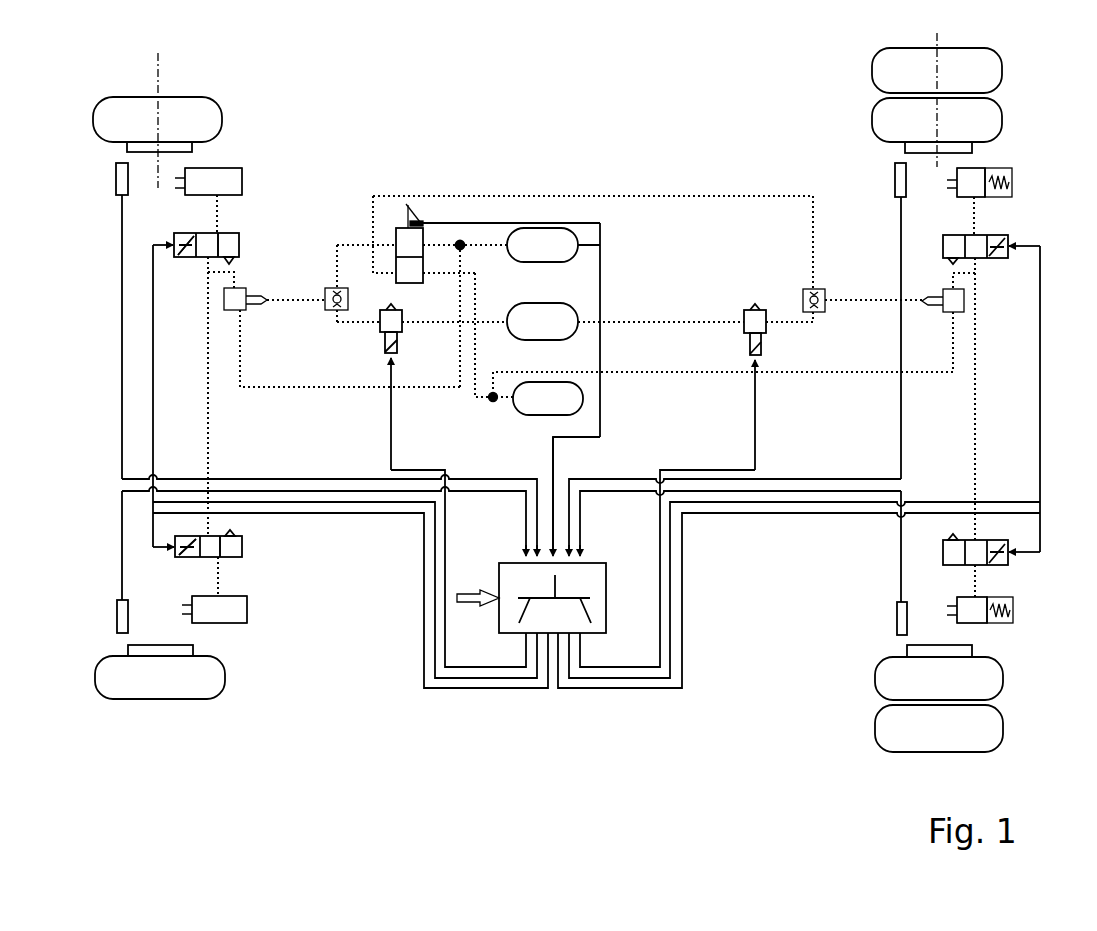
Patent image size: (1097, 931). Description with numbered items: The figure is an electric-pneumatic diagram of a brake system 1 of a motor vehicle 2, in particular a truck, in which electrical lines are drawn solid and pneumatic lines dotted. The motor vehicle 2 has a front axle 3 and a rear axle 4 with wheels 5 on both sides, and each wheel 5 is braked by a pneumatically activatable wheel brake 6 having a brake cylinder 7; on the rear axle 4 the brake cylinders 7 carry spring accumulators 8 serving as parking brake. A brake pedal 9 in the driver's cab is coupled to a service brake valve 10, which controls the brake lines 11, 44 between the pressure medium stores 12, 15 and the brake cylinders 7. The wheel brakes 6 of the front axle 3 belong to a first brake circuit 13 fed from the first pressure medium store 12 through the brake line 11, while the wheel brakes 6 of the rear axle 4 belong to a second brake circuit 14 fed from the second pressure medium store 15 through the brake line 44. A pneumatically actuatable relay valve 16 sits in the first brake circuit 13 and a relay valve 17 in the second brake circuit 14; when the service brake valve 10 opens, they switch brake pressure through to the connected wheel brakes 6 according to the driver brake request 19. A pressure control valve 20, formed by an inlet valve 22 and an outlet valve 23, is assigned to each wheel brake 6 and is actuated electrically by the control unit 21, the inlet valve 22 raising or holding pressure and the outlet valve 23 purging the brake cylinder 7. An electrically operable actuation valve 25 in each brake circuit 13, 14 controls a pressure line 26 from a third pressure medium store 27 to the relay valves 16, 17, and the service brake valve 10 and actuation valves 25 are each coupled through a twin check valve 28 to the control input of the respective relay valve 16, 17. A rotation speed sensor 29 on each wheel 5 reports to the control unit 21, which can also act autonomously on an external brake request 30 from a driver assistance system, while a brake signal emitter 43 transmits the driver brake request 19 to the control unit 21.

The brake system 1 is at (412, 645).
The motor vehicle 2 is at (552, 106).
The front axle 3 is at (160, 76).
The rear axle 4 is at (940, 36).
The wheels 5 is at (207, 113).
The wheel brake 6 is at (216, 153).
The brake cylinder 7 is at (229, 176).
The spring accumulator 8 is at (1012, 186).
The brake pedal 9 is at (408, 212).
The service brake valve 10 is at (392, 240).
The brake line 11 is at (340, 246).
The first pressure medium store 12 is at (585, 246).
The first brake circuit 13 is at (318, 389).
The second brake circuit 14 is at (662, 370).
The second pressure medium store 15 is at (588, 400).
The relay valve 16 is at (248, 291).
The relay valve 17 is at (966, 300).
The driver brake request 19 is at (548, 222).
The pressure control valve 20 is at (198, 264).
The control unit 21 is at (592, 578).
The inlet valve 22 is at (202, 242).
The outlet valve 23 is at (236, 243).
The actuation valve 25 is at (394, 326).
The pressure line 26 is at (362, 326).
The third pressure medium store 27 is at (585, 322).
The twin check valve 28 is at (332, 308).
The rotation speed sensor 29 is at (118, 178).
The external brake request 30 is at (494, 593).
The brake signal emitter 43 is at (420, 216).
The brake line 44 is at (506, 195).